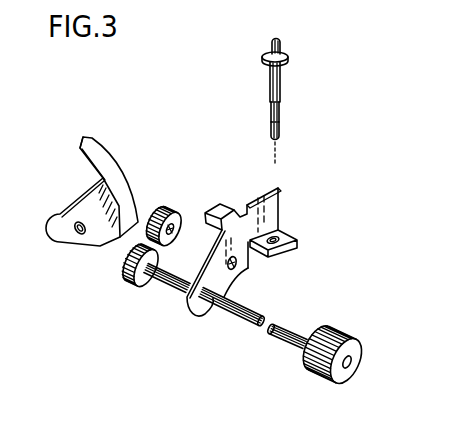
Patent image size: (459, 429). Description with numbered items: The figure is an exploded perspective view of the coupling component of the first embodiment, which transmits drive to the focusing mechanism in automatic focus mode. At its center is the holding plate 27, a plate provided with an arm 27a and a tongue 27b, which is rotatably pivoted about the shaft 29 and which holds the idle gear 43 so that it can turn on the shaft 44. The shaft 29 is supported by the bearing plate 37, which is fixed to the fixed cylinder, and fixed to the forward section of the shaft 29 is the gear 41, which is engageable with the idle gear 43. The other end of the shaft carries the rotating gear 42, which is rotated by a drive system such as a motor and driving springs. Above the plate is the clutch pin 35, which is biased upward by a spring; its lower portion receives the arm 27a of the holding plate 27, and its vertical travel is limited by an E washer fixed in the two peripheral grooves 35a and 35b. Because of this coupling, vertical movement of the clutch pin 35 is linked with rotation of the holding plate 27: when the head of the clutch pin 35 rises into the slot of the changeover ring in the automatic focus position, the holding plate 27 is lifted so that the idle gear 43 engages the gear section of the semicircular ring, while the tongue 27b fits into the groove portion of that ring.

The holding plate 27 is at (198, 305).
The arm 27a is at (291, 237).
The tongue 27b is at (219, 206).
The shaft 29 is at (241, 318).
The clutch pin 35 is at (281, 82).
The peripheral groove 35a is at (280, 105).
The peripheral groove 35b is at (279, 127).
The bearing plate 37 is at (66, 240).
The gear 41 is at (146, 282).
The rotating gear 42 is at (356, 353).
The idle gear 43 is at (177, 207).
The shaft 44 is at (236, 266).